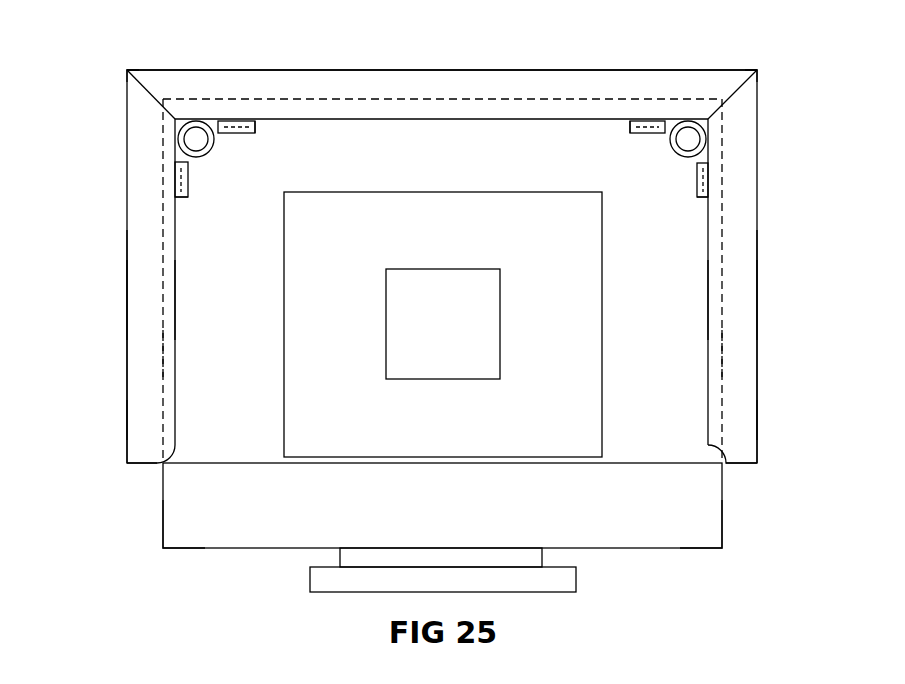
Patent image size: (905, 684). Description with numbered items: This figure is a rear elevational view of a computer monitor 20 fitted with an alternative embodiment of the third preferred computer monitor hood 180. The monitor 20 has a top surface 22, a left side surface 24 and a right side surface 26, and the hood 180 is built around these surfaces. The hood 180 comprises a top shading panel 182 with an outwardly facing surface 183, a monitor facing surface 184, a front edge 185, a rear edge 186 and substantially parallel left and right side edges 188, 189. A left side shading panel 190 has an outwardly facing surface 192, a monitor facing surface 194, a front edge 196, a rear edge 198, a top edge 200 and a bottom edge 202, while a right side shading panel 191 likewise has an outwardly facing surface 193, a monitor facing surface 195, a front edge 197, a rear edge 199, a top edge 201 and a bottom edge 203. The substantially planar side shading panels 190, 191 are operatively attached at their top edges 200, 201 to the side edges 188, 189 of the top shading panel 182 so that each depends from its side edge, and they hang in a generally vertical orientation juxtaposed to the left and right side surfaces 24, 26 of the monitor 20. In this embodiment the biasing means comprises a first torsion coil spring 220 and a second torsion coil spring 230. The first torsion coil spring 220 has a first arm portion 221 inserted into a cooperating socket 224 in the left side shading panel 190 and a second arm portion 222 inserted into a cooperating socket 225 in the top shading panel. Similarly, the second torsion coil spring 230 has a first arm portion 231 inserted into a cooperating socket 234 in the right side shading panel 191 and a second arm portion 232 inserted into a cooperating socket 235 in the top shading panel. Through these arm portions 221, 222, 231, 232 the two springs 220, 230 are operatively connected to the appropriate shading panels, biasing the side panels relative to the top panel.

The computer monitor 20 is at (201, 588).
The top surface 22 is at (433, 99).
The left side surface 24 is at (722, 540).
The right side surface 26 is at (162, 537).
The computer monitor hood 180 is at (582, 85).
The top shading panel 182 is at (503, 85).
The outwardly facing surface 183 is at (345, 70).
The monitor facing surface 184 is at (377, 121).
The front edge 185 is at (277, 88).
The rear edge 186 is at (510, 103).
The left side edge 188 is at (757, 70).
The right side edge 189 is at (127, 70).
The left side shading panel 190 is at (747, 248).
The right side shading panel 191 is at (140, 218).
The outwardly facing surface 192 is at (757, 302).
The outwardly facing surface 193 is at (127, 288).
The monitor facing surface 194 is at (707, 298).
The monitor facing surface 195 is at (176, 283).
The front edge 196 is at (741, 339).
The front edge 197 is at (143, 335).
The rear edge 198 is at (742, 412).
The rear edge 199 is at (140, 410).
The top edge 200 is at (757, 70).
The top edge 201 is at (127, 70).
The bottom edge 202 is at (740, 467).
The bottom edge 203 is at (140, 467).
The first torsion coil spring 220 is at (710, 130).
The first arm portion 221 is at (697, 197).
The second arm portion 222 is at (650, 130).
The cooperating socket 224 is at (695, 180).
The cooperating socket 225 is at (630, 128).
The second torsion coil spring 230 is at (177, 128).
The first arm portion 231 is at (188, 197).
The second arm portion 232 is at (242, 133).
The cooperating socket 234 is at (190, 180).
The cooperating socket 235 is at (257, 128).